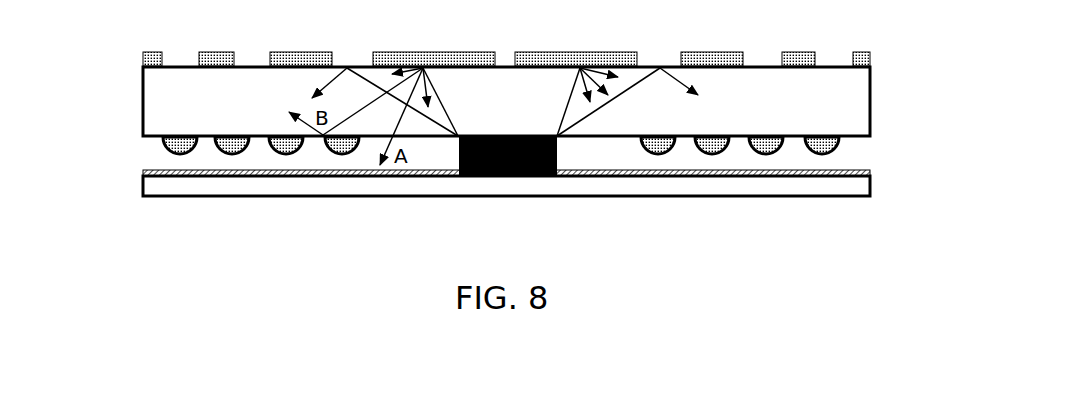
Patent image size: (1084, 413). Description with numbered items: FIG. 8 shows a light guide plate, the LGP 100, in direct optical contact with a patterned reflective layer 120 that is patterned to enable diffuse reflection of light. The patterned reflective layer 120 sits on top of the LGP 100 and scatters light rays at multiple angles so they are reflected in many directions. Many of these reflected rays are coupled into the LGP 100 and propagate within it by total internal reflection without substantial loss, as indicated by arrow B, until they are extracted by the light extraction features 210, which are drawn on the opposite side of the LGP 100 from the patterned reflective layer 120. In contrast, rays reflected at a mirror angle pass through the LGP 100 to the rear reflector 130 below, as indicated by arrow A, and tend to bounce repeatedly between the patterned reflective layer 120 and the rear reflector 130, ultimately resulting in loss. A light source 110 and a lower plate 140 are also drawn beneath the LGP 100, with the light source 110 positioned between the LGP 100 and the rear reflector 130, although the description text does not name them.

The LGP 100 is at (143, 103).
The patterned reflective layer 120 is at (871, 57).
The light extraction features 210 is at (840, 146).
The light emitting element 110 is at (557, 157).
The rear reflector 130 is at (143, 175).
The bottom substrate / reflector plate 140 is at (871, 185).